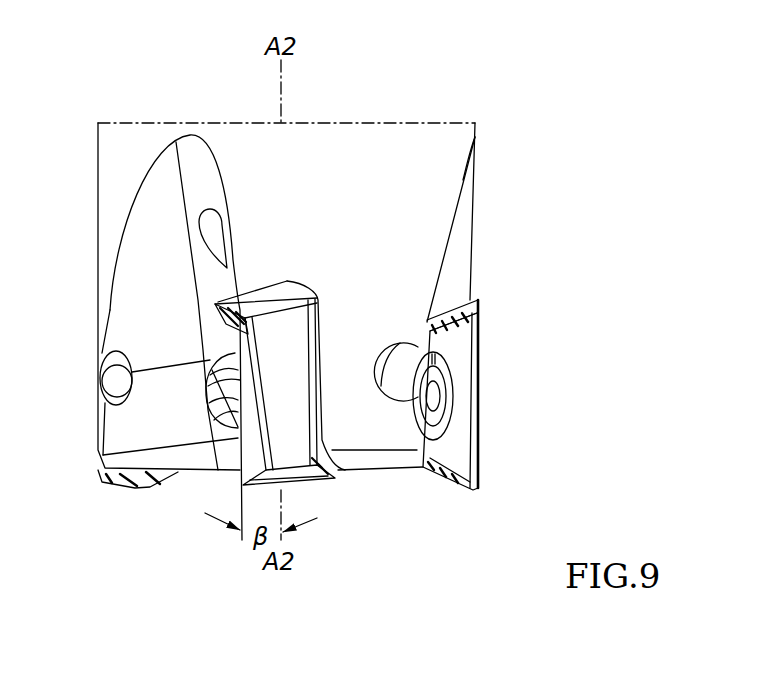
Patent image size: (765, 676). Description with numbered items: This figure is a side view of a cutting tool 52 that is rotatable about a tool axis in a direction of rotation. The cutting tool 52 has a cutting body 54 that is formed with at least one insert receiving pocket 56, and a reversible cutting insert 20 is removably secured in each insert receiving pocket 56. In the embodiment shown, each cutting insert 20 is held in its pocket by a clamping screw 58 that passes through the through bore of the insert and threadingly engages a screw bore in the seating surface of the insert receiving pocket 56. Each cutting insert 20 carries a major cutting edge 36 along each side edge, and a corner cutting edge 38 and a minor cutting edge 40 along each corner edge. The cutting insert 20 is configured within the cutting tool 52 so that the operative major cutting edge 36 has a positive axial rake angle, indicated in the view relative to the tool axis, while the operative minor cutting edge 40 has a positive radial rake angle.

The cutting tool 52 is at (398, 107).
The cutting body 54 is at (397, 268).
The insert receiving pocket 56 is at (296, 288).
The cutting insert 20 is at (455, 345).
The clamping screw 58 is at (440, 385).
The major cutting edge 36 is at (478, 407).
The corner cutting edge 38 is at (478, 487).
The minor cutting edge 40 is at (455, 492).